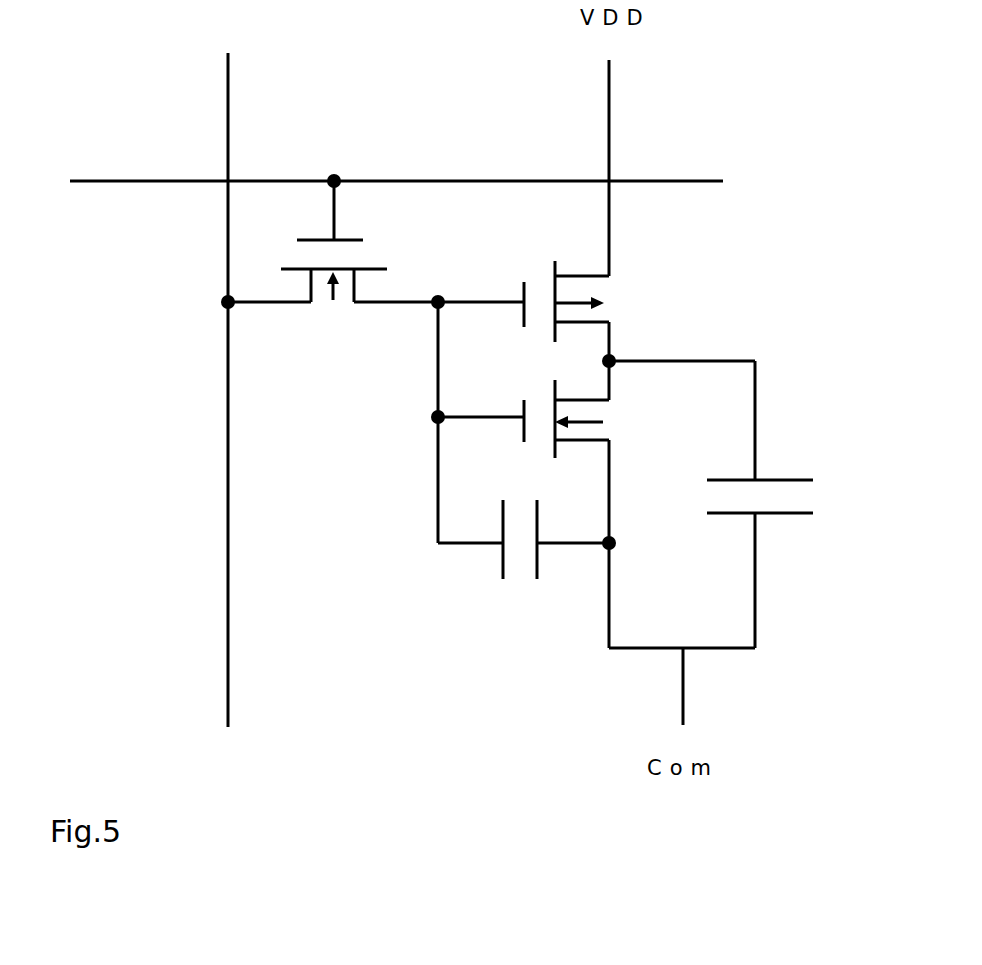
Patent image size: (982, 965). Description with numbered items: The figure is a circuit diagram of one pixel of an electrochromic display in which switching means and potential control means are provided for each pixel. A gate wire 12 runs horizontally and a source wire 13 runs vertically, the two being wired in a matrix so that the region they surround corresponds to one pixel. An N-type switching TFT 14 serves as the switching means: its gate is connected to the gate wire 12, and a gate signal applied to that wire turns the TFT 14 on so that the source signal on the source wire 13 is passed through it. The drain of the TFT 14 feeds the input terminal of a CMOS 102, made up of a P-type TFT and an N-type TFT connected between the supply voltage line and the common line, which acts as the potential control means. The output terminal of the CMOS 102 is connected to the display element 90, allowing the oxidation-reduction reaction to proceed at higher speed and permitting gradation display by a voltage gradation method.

The gate wire 12 is at (364, 180).
The source wire 13 is at (232, 367).
The switching TFT 14 is at (333, 269).
The CMOS 102 is at (637, 319).
The display element 90 is at (800, 504).